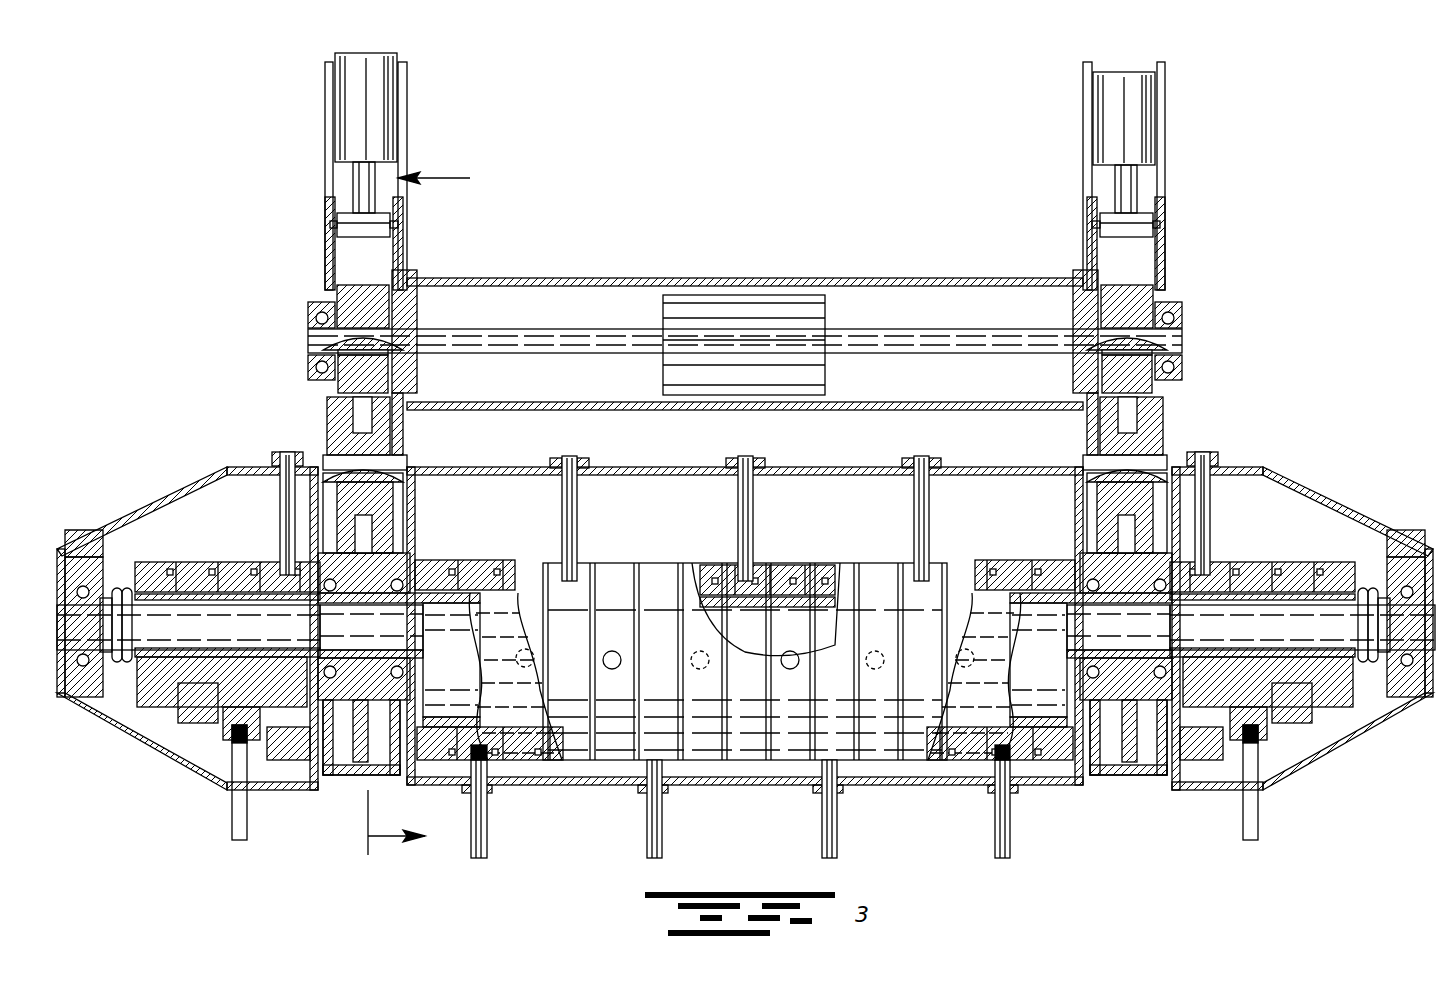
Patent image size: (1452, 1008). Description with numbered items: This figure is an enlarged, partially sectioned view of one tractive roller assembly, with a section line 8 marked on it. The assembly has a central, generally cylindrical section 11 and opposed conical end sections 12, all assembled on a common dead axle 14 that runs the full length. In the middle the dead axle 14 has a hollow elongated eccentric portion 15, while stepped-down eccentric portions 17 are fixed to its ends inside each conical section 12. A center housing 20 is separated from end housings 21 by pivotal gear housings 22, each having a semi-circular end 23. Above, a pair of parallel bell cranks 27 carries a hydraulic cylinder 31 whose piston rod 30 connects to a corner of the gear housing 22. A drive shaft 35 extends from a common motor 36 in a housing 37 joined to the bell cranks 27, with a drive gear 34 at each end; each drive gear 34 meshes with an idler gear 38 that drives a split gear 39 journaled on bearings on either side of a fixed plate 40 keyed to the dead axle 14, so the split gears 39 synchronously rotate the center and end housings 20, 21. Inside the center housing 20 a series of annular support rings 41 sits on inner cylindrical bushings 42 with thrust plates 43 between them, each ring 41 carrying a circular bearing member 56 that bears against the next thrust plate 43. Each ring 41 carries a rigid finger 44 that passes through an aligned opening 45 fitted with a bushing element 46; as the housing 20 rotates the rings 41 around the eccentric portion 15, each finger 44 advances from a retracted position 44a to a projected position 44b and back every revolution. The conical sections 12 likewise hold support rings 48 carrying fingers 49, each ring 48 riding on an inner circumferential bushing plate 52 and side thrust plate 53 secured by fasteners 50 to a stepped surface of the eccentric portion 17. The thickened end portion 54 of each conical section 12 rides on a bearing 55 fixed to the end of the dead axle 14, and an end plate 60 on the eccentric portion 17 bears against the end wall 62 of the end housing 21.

The section line 8- 8 is at (428, 509).
The central cylindrical section 11 is at (846, 470).
The conical end section 12 is at (152, 506).
The dead axle 14 is at (150, 604).
The eccentric portion 15 is at (960, 762).
The stepped-down eccentric portion 17 is at (200, 690).
The center housing 20 is at (870, 785).
The end housing 21 is at (100, 725).
The pivotal gear housing 22 is at (355, 790).
The semi-circular end 23 is at (372, 770).
The bell crank 27 is at (324, 104).
The piston rod 30 is at (356, 178).
The hydraulic cylinder 31 is at (345, 62).
The drive gear 34 is at (345, 296).
The drive shaft 35 is at (935, 332).
The motor 36 is at (765, 300).
The housing 37 is at (850, 280).
The idler gear 38 is at (345, 426).
The split gear 39 is at (400, 560).
The fixed web or plate 40 is at (370, 530).
The annular support ring 41 is at (530, 568).
The inner cylindrical bushing 42 is at (520, 592).
The thrust plate 43 is at (490, 598).
The finger 44 is at (619, 654).
The retracted position of finger 44a is at (578, 497).
The projected position of finger 44b is at (487, 855).
The opening 45 is at (576, 460).
The bushing element 46 is at (585, 462).
The annular support ring 48 is at (155, 722).
The finger 49 is at (280, 462).
The fastener 50 is at (225, 718).
The inner circumferential bushing plate 52 is at (210, 565).
The side thrust plate 53 is at (290, 570).
The thickened end portion 54 is at (88, 555).
The bearing 55 is at (112, 595).
The circular bearing member 56 is at (172, 570).
The end plate 60 is at (320, 760).
The end wall 62 is at (292, 492).